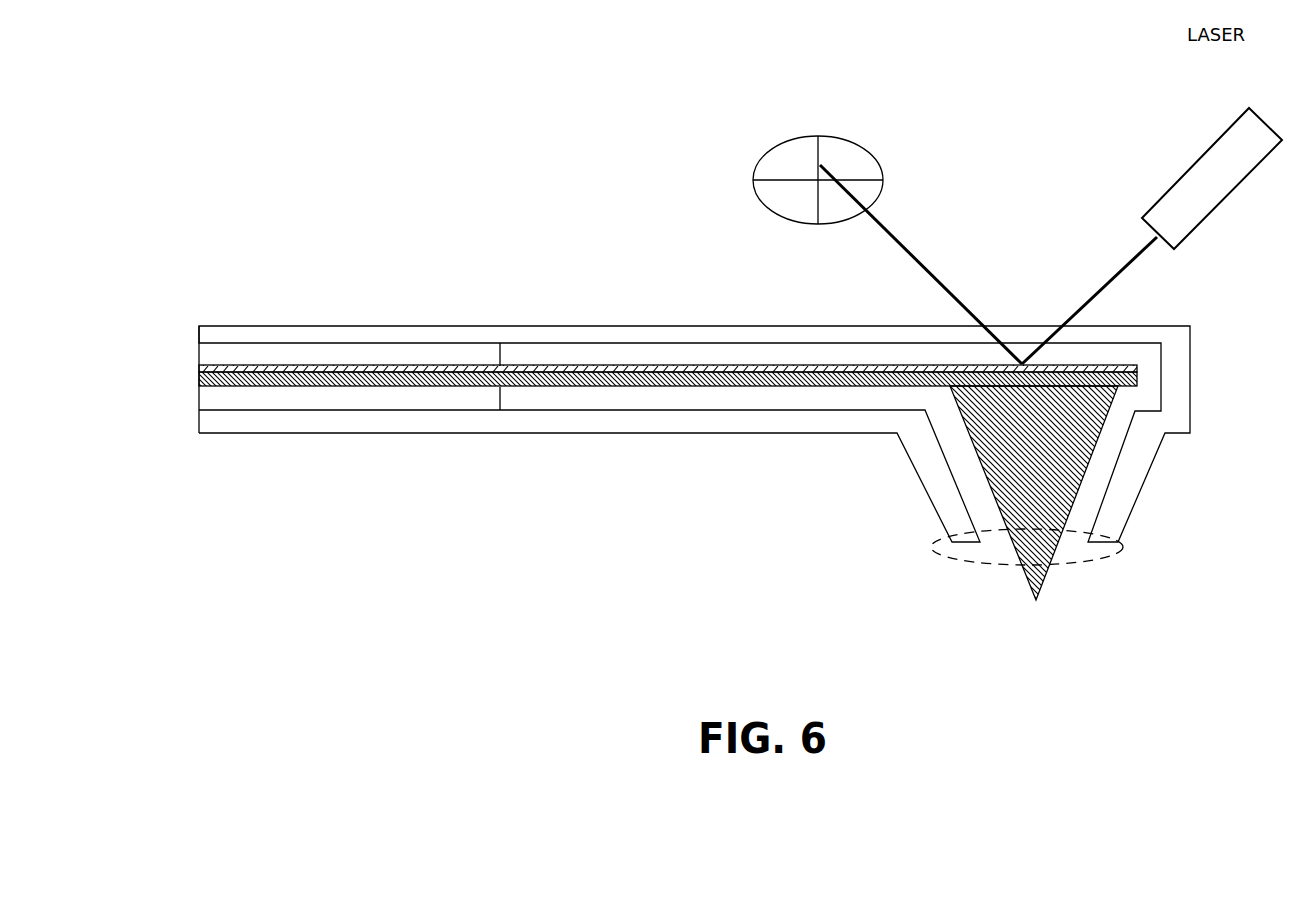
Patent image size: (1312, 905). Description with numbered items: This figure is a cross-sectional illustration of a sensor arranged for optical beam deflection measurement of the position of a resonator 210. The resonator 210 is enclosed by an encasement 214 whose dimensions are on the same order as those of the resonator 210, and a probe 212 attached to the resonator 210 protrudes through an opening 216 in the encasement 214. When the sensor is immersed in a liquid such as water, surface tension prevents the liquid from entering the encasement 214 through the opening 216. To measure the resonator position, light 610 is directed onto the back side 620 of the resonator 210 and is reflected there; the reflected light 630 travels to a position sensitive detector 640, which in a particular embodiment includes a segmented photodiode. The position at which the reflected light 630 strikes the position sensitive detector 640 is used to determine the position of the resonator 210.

The encasement 214 is at (198, 423).
The resonator 210 is at (618, 386).
The back side of resonator 620 is at (528, 365).
The probe 212 is at (1090, 452).
The opening 216 is at (1060, 562).
The light 610 is at (1093, 303).
The reflected light 630 is at (905, 240).
The position sensitive detector 640 is at (830, 137).